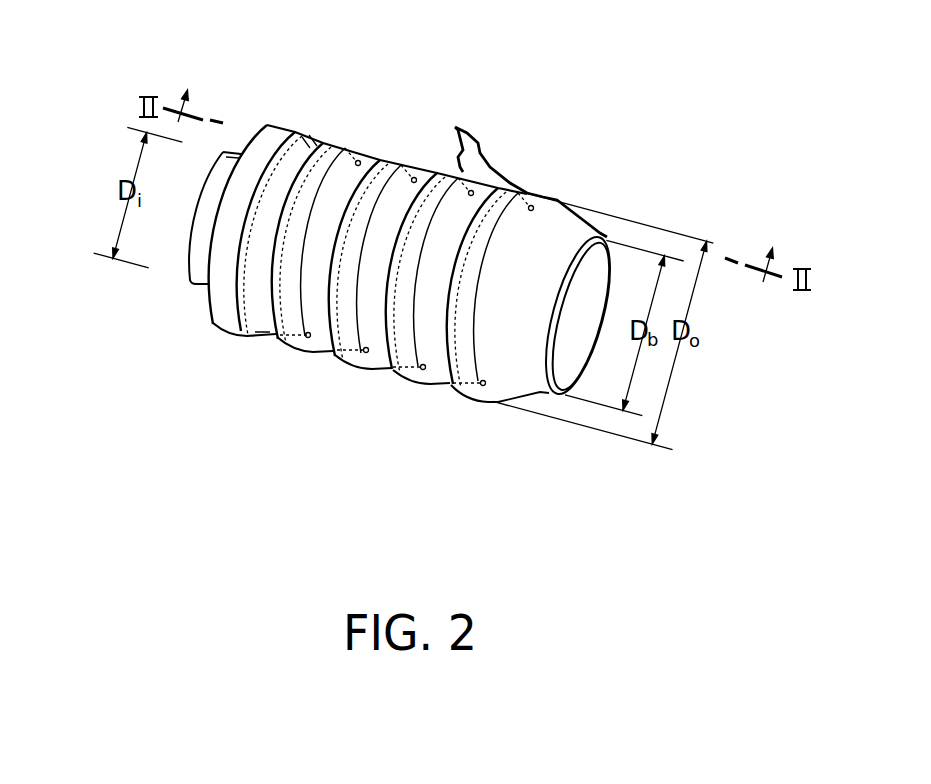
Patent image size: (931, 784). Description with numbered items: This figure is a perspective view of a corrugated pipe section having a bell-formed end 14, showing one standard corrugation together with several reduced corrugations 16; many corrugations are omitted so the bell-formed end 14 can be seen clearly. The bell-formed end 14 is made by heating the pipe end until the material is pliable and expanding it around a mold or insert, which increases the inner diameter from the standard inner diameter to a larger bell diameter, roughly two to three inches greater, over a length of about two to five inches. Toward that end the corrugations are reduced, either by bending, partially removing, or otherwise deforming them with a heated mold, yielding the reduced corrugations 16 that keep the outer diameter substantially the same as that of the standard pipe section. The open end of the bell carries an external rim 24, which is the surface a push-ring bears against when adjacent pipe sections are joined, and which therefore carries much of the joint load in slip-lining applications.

The bell-formed end 14 is at (421, 211).
The reduced corrugations 16 is at (518, 166).
The external rim 24 is at (607, 237).